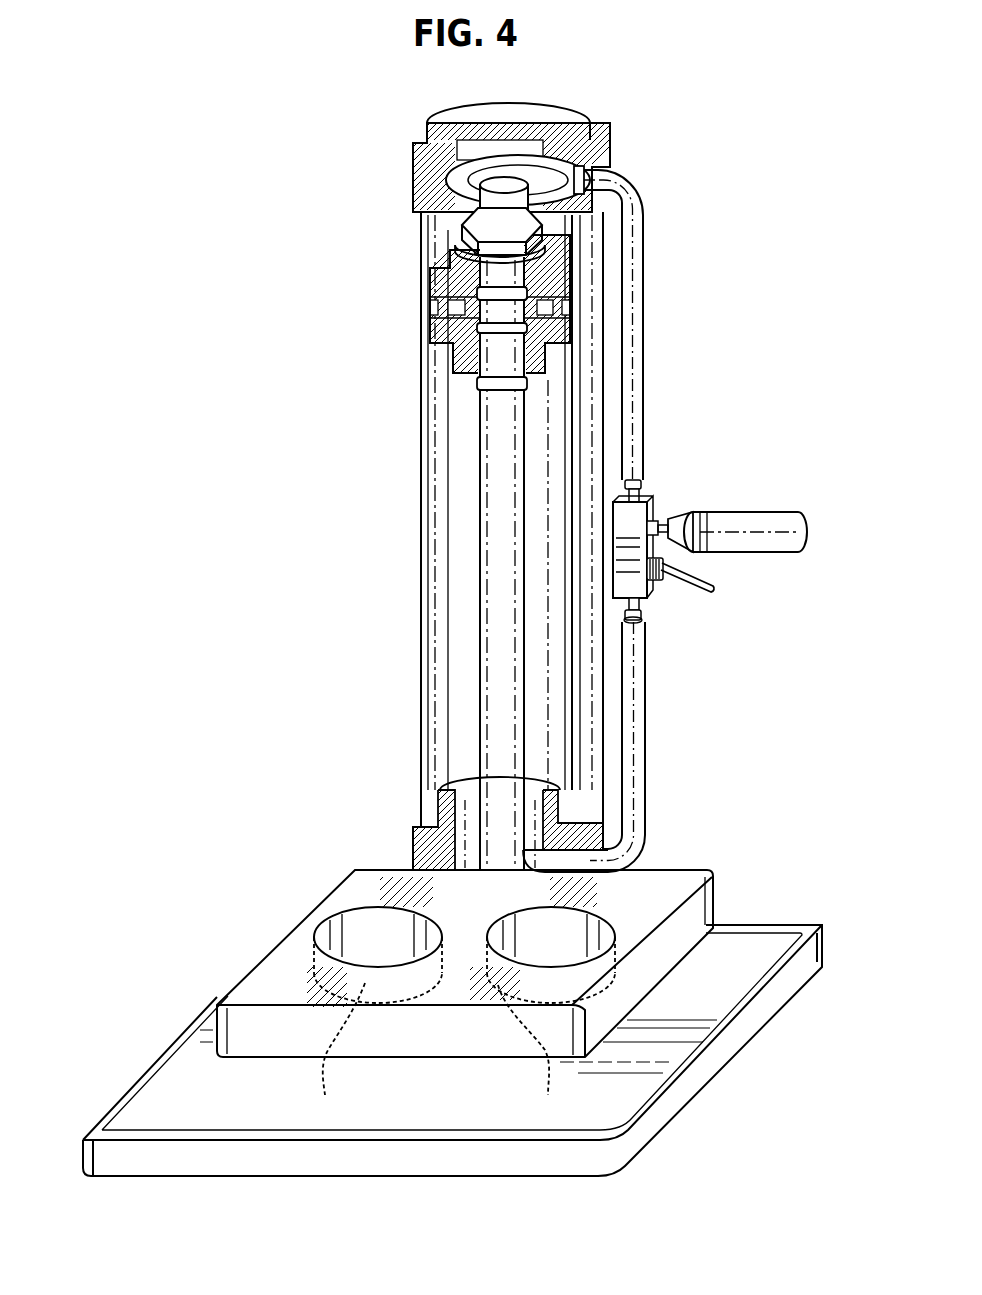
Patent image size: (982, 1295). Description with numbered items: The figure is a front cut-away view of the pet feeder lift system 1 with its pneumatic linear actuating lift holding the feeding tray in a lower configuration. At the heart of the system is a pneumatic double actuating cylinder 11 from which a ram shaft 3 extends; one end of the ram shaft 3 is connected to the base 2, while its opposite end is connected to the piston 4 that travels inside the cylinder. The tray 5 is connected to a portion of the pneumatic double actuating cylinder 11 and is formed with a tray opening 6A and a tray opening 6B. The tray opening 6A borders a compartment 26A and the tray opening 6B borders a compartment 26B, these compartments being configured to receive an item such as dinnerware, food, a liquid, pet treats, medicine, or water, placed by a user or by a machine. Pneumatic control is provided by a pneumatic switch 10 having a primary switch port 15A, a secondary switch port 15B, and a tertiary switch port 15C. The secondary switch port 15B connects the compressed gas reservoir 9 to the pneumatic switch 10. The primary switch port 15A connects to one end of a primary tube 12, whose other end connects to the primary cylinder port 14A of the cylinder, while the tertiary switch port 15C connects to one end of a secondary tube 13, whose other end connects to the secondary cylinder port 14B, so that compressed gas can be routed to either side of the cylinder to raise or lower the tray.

The pet feeder lift system 1 is at (335, 175).
The base 2 is at (713, 1080).
The ram shaft 3 is at (490, 661).
The piston 4 is at (447, 282).
The tray 5 is at (257, 961).
The tray opening 6A is at (368, 917).
The tray opening 6B is at (577, 932).
The compressed gas reservoir 9 is at (748, 520).
The pneumatic switch 10 is at (660, 589).
The pneumatic double actuating cylinder 11 is at (421, 427).
The primary tube 12 is at (643, 228).
The secondary tube 13 is at (645, 745).
The primary cylinder port 14A is at (593, 168).
The secondary cylinder port 14B is at (593, 856).
The primary switch port 15A is at (638, 489).
The secondary switch port 15B is at (650, 587).
The tertiary switch port 15C is at (641, 605).
The compartment 26A is at (334, 1054).
The compartment 26B is at (535, 1055).